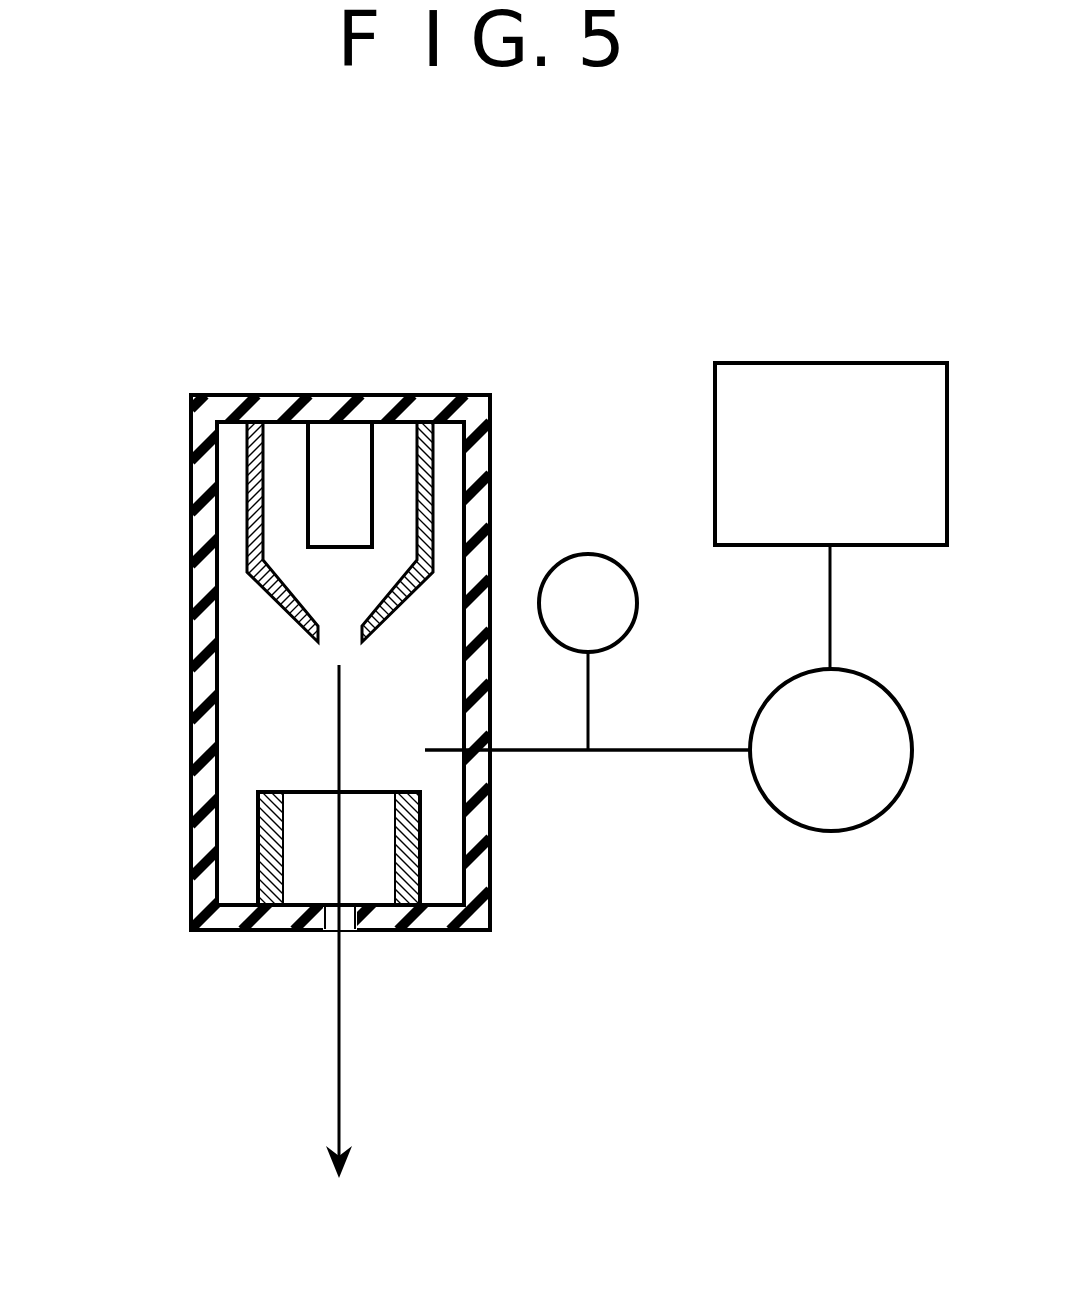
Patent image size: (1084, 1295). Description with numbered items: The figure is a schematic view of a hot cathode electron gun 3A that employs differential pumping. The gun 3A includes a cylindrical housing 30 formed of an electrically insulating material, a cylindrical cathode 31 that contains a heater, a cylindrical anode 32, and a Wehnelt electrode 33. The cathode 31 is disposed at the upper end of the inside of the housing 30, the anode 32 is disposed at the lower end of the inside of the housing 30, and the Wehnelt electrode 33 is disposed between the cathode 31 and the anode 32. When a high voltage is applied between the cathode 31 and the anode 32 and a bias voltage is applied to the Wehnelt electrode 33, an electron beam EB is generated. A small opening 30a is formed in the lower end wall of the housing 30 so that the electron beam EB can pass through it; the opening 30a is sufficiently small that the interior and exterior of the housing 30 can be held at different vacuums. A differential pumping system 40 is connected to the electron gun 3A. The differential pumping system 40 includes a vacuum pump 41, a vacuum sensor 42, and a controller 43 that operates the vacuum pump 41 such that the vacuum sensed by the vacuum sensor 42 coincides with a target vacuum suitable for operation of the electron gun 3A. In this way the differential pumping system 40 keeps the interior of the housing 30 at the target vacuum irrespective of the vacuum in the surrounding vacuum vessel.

The hot cathode electron gun 3A is at (146, 397).
The cylindrical housing 30 is at (193, 715).
The small opening 30a is at (312, 955).
The cylindrical cathode 31 is at (335, 447).
The cylindrical anode 32 is at (265, 843).
The Wehnelt electrode 33 is at (250, 540).
The differential pumping system 40 is at (652, 375).
The vacuum pump 41 is at (831, 816).
The vacuum sensor 42 is at (590, 562).
The controller 43 is at (890, 380).
The electron beam EB is at (340, 1093).